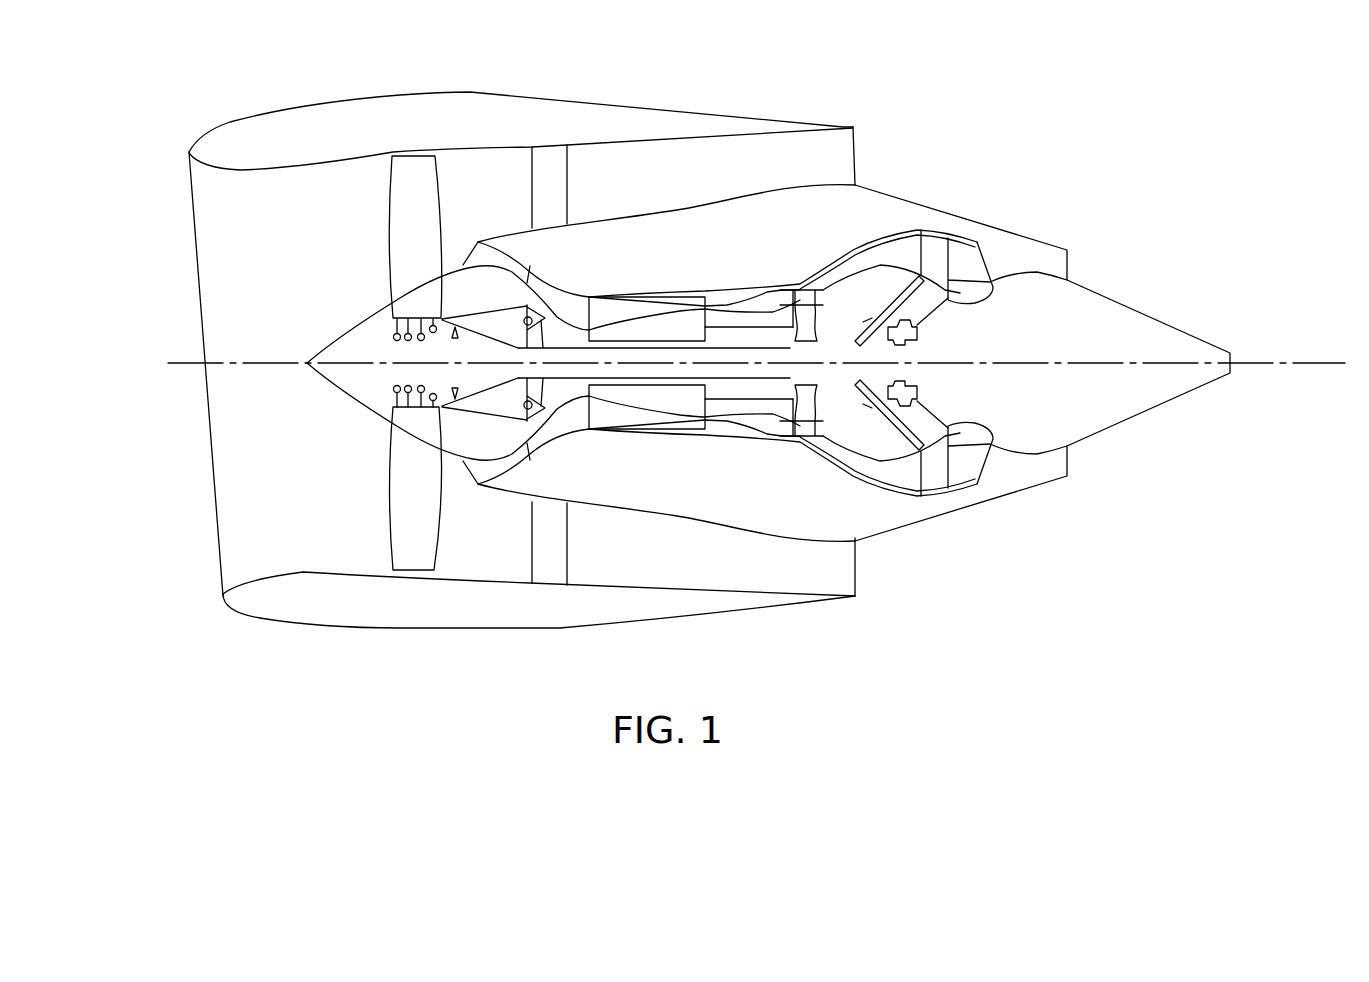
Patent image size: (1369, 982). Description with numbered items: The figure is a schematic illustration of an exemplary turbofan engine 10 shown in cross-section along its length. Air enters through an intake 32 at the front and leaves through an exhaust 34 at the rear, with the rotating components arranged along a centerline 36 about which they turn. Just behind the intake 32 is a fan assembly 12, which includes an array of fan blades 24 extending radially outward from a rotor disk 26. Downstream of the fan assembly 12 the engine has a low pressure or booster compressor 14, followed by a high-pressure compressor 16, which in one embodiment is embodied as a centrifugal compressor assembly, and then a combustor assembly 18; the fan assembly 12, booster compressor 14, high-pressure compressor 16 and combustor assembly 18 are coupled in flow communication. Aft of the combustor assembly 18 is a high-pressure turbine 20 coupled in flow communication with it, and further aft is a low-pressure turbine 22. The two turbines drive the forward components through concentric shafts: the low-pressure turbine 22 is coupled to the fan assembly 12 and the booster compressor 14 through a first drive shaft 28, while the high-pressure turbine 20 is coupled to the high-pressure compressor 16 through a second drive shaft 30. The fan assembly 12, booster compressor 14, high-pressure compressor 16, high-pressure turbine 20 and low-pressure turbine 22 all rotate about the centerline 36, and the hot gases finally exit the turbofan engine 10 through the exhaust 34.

The turbofan engine 10 is at (1004, 90).
The fan assembly 12 is at (370, 217).
The booster compressor 14 is at (484, 222).
The high-pressure compressor 16 is at (641, 282).
The combustor assembly 18 is at (756, 272).
The high-pressure turbine 20 is at (812, 258).
The low-pressure turbine 22 is at (897, 215).
The fan blades 24 is at (430, 250).
The rotor disk 26 is at (382, 352).
The first drive shaft 28 is at (574, 348).
The second drive shaft 30 is at (753, 327).
The intake 32 is at (138, 196).
The exhaust 34 is at (1100, 262).
The centerline 36 is at (1282, 362).